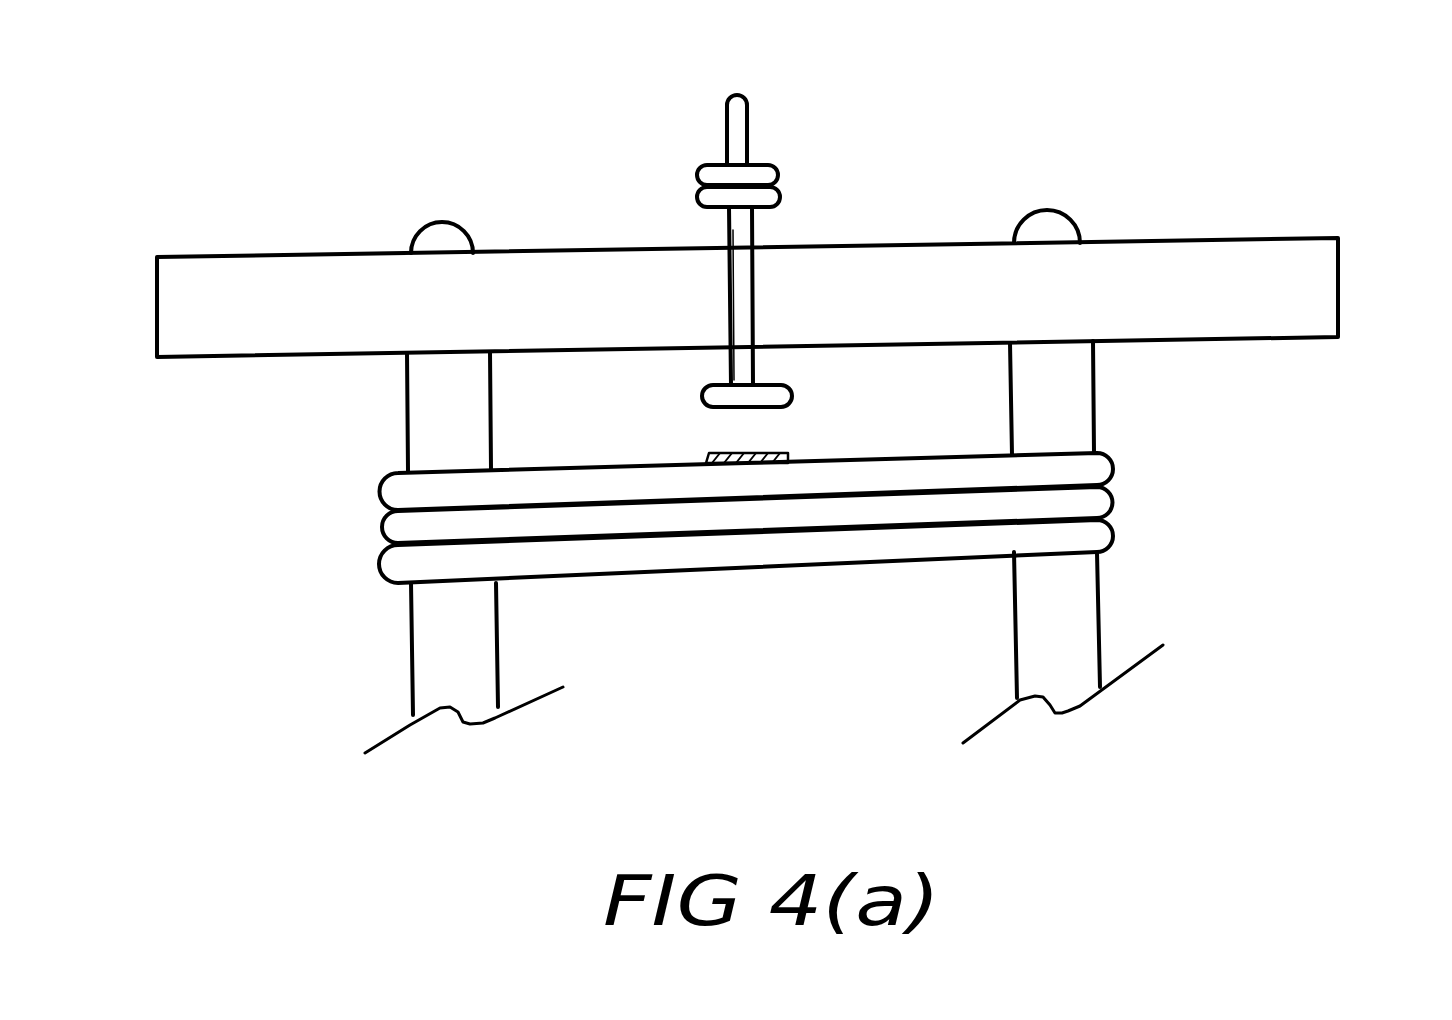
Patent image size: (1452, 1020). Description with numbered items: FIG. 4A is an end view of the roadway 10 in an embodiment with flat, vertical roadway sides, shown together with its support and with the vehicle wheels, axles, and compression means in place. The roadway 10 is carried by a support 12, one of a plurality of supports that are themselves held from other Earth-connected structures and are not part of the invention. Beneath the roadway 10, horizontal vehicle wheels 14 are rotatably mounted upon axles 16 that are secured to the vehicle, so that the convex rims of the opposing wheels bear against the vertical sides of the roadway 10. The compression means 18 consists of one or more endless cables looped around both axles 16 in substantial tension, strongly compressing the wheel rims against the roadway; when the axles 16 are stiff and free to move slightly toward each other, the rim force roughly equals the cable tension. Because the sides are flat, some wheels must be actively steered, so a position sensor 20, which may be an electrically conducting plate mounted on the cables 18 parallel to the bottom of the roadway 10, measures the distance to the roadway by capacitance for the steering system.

The roadway 10 is at (737, 232).
The supports 12 is at (740, 138).
The vehicle wheels 14 is at (245, 283).
The axles 16 is at (438, 412).
The compression means 18 is at (778, 547).
The position sensors 20 is at (765, 450).